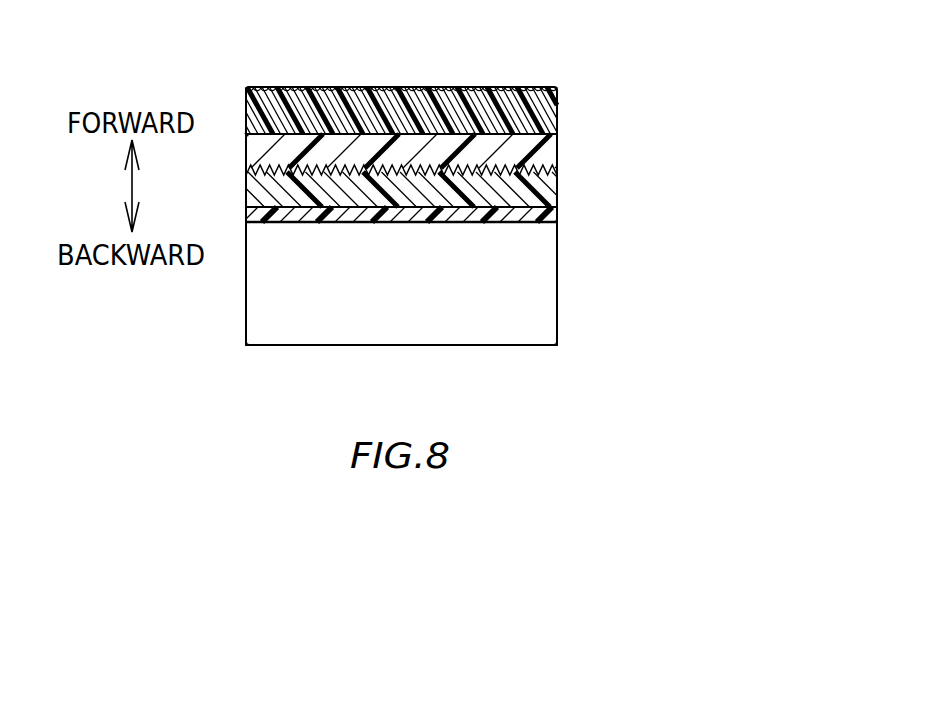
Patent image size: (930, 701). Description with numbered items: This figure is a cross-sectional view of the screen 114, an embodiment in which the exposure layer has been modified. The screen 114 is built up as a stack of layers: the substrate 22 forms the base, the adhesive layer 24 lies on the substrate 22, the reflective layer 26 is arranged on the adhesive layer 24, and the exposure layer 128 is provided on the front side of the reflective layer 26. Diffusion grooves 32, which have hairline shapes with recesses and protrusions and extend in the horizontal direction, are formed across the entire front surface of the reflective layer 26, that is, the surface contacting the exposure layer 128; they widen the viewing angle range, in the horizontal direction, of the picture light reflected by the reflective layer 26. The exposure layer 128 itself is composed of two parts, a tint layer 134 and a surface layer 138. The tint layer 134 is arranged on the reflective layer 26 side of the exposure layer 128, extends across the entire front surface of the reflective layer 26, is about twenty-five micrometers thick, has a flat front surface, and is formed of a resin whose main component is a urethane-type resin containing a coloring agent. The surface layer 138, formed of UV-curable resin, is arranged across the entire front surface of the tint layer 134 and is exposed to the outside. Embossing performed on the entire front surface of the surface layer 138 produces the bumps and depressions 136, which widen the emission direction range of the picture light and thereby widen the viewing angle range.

The screen 114 is at (606, 32).
The bumps and depressions 136 is at (240, 90).
The surface layer 138 is at (558, 102).
The tint layer 134 is at (558, 148).
The exposure layer 128 is at (471, 118).
The diffusion grooves 32 is at (240, 172).
The reflective layer 26 is at (558, 185).
The adhesive layer 24 is at (558, 212).
The substrate 22 is at (558, 270).